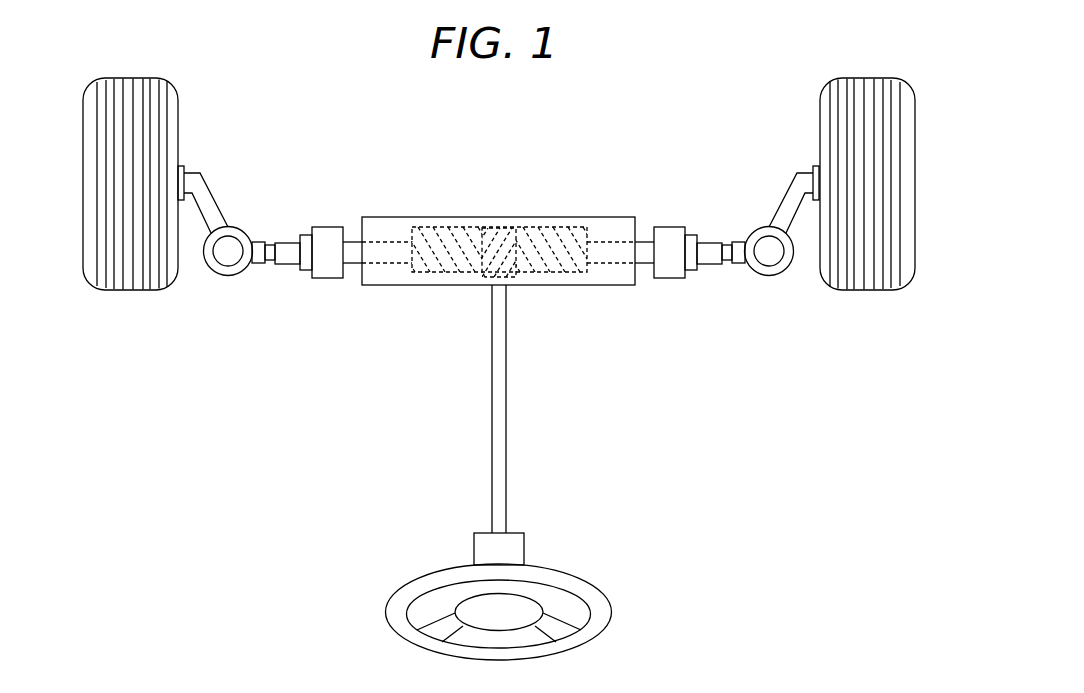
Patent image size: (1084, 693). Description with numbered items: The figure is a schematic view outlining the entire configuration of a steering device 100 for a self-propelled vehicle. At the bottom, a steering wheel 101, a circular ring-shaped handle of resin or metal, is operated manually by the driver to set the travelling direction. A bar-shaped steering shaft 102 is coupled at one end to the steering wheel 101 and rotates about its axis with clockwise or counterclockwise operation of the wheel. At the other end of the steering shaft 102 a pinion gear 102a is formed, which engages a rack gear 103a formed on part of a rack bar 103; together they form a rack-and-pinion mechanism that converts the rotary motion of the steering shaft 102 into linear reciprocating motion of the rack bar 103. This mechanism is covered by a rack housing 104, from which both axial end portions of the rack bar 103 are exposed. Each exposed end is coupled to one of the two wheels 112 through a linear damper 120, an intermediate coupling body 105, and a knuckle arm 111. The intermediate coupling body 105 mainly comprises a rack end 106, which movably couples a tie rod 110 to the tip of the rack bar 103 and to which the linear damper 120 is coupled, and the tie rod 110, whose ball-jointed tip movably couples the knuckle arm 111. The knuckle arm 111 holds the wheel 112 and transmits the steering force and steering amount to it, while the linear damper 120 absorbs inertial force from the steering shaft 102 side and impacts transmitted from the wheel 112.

The steering device 100 is at (240, 48).
The steering wheel 101 is at (612, 610).
The steering shaft 102 is at (517, 343).
The pinion gear 102a is at (497, 226).
The rack bar 103 is at (498, 213).
The rack gear 103a is at (560, 226).
The rack housing 104 is at (585, 286).
The intermediate coupling body 105 is at (499, 302).
The rack end 106 is at (288, 265).
The tie rod 110 is at (240, 275).
The knuckle arm 111 is at (206, 186).
The wheel 112 is at (179, 138).
The linear damper 120 is at (318, 227).